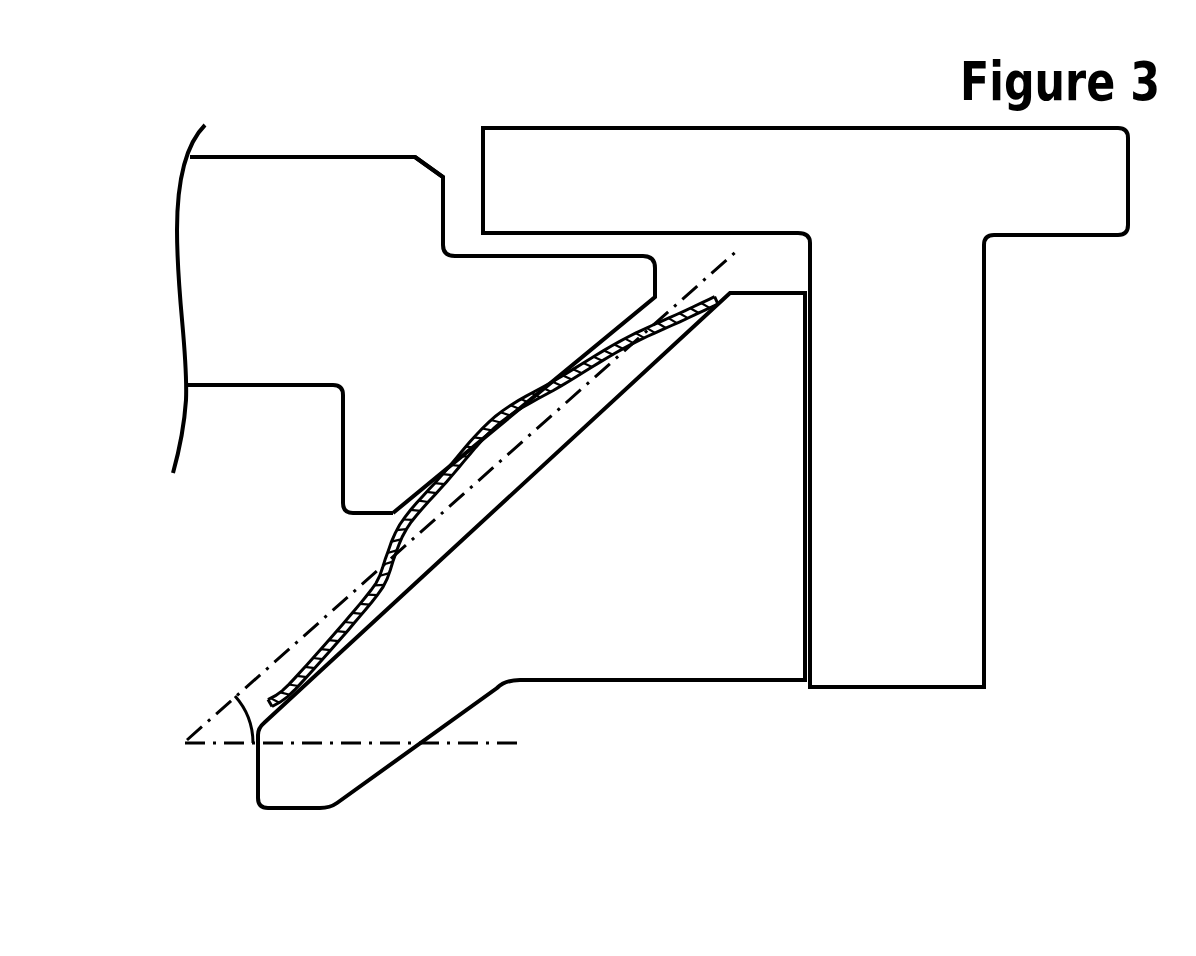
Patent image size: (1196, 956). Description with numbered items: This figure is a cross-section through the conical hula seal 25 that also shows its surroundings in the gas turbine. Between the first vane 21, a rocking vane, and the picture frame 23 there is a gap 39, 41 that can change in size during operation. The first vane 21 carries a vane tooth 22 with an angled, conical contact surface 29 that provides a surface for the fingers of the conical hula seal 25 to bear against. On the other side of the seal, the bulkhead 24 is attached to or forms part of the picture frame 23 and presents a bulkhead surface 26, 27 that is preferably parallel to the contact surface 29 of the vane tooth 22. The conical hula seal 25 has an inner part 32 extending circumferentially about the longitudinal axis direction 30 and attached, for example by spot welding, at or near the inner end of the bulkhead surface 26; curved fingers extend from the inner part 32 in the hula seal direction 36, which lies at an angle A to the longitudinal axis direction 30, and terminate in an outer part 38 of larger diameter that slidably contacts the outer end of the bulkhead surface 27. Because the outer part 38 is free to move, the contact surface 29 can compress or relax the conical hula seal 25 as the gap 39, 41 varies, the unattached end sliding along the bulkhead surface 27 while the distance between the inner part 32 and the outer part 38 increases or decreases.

The first vane 21 is at (305, 258).
The vane tooth 22 is at (562, 308).
The picture frame 23 is at (938, 365).
The bulkhead 24 is at (617, 600).
The conical hula seal 25 is at (362, 592).
The bulkhead surface (inner end) 26 is at (320, 688).
The bulkhead surface (outer end) 27 is at (720, 320).
The contact surface 29 is at (493, 413).
The longitudinal axis direction 30 is at (433, 743).
The inner part 32 is at (287, 683).
The hula seal direction 36 is at (713, 272).
The outer part 38 is at (683, 320).
The gap 39 is at (465, 193).
The gap 41 is at (380, 525).
The angle A is at (222, 728).